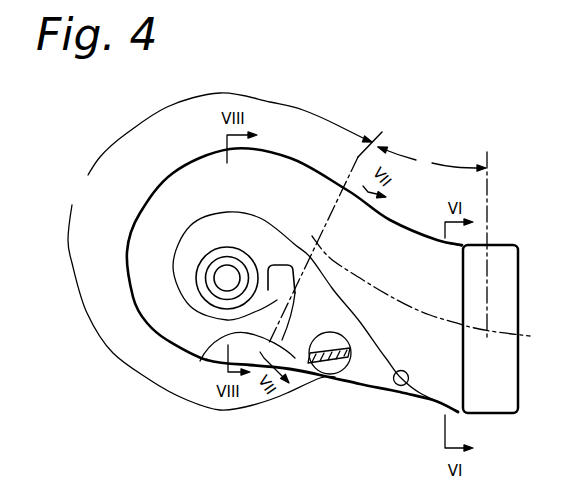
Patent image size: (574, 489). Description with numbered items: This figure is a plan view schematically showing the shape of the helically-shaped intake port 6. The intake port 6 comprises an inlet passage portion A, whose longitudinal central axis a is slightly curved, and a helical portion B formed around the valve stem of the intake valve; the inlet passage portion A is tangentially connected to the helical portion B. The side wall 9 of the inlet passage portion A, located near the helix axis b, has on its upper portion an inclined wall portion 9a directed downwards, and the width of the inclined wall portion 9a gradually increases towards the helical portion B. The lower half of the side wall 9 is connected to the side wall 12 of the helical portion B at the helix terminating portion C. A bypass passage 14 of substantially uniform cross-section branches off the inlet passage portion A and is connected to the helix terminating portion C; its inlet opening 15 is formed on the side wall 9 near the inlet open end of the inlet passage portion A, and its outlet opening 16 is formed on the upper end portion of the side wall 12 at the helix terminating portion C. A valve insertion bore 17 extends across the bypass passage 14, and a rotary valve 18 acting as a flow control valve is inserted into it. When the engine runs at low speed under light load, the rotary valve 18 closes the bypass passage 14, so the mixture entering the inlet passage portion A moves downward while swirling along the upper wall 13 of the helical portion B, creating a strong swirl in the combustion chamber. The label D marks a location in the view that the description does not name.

The helically-shaped intake port 6 is at (512, 236).
The side wall 9 is at (461, 414).
The inclined wall portion 9a is at (383, 367).
The side wall 12 is at (136, 308).
The upper wall 13 is at (138, 252).
The bypass passage 14 is at (357, 383).
The inlet opening 15 is at (401, 386).
The outlet opening 16 is at (214, 346).
The valve insertion bore 17 is at (334, 336).
The rotary valve 18 is at (331, 376).
The longitudinal central axis a is at (512, 327).
The helix axis b is at (222, 280).
The inlet passage portion A is at (432, 159).
The helical portion B is at (221, 147).
The helix terminating portion C is at (287, 301).
The tongue tip D is at (279, 273).